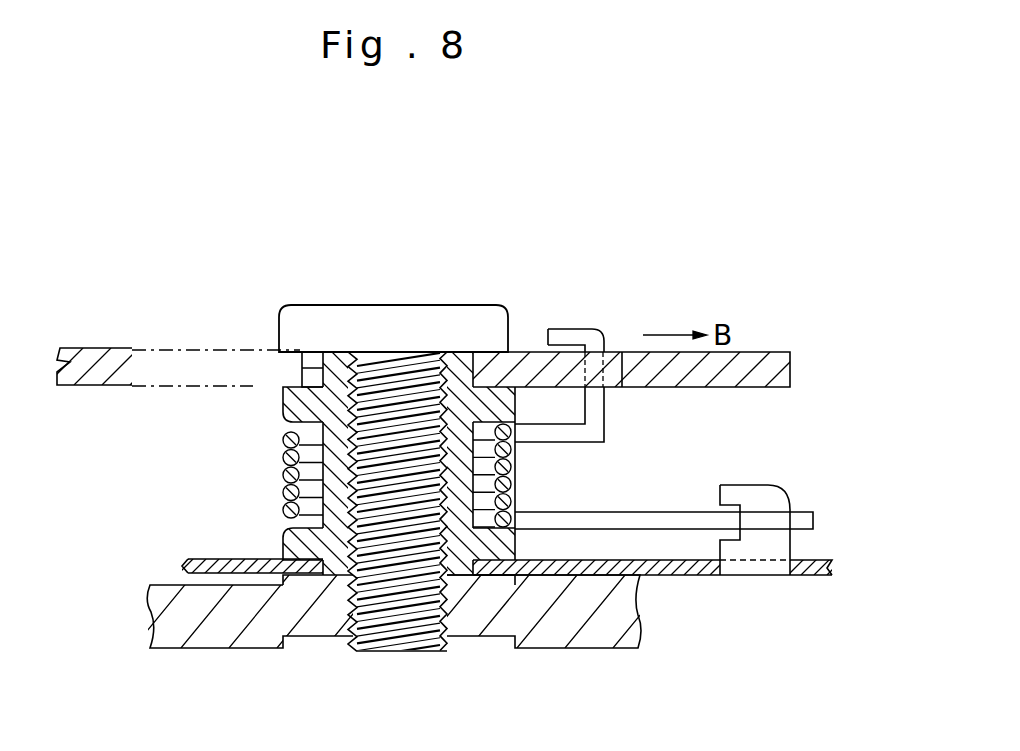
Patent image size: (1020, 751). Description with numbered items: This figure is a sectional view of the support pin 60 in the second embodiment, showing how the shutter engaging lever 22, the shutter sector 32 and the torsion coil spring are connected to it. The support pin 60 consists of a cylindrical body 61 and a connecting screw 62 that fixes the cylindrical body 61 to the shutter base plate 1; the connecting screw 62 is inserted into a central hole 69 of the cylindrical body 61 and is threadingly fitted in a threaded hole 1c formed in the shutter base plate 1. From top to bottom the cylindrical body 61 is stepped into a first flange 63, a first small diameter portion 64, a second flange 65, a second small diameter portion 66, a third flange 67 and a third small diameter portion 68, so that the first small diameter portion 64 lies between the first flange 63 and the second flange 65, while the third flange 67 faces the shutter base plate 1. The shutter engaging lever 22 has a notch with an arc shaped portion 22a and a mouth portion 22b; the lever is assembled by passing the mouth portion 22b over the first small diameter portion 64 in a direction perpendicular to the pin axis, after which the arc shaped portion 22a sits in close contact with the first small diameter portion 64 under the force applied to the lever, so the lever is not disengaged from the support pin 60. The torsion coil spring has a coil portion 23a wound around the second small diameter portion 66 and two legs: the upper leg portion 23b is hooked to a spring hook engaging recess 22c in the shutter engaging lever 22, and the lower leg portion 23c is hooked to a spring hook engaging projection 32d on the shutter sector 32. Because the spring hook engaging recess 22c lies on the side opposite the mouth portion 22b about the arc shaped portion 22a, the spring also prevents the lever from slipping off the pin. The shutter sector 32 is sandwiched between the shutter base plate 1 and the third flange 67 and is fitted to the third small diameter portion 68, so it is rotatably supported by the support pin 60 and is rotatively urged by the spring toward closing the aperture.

The support pin 60 is at (480, 214).
The cylindrical body 61 is at (448, 348).
The connecting screw 62 is at (353, 302).
The first flange 63 is at (296, 322).
The first small diameter portion 64 is at (300, 371).
The second flange 65 is at (282, 403).
The second small diameter portion 66 is at (290, 497).
The third flange 67 is at (282, 545).
The third small diameter portion 68 is at (307, 575).
The central hole 69 is at (447, 440).
The shutter base plate 1 is at (488, 628).
The threaded hole 1c is at (380, 583).
The shutter engaging lever 22 is at (532, 350).
The arc shaped portion 22a is at (497, 307).
The mouth portion 22b is at (172, 360).
The spring hook engaging recess 22c is at (618, 350).
The coil portion 23a is at (517, 470).
The leg portion 23b is at (593, 330).
The leg portion 23c is at (812, 520).
The shutter sector 32 is at (690, 576).
The spring hook engaging projection 32d is at (768, 490).